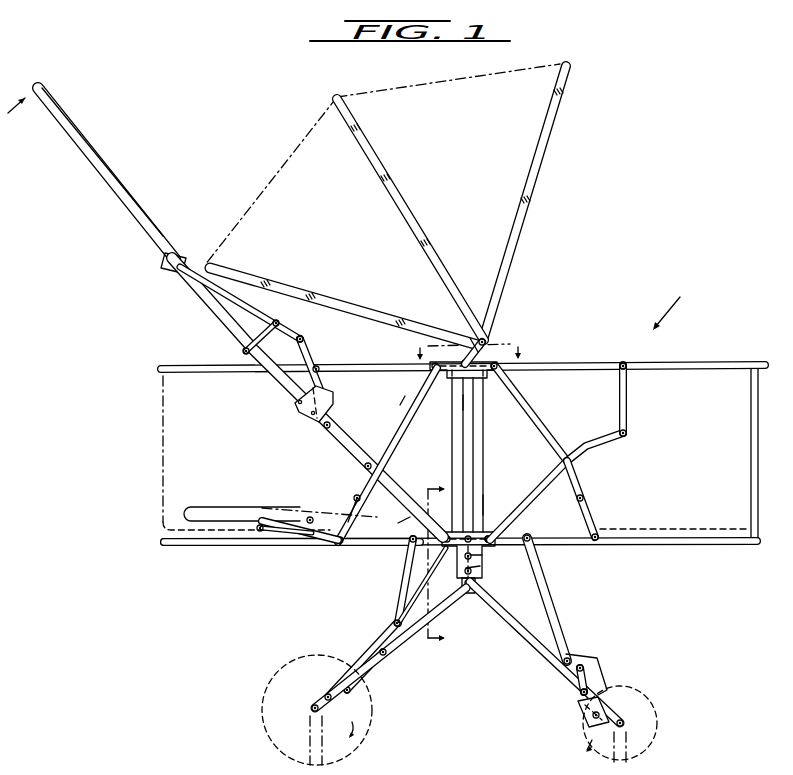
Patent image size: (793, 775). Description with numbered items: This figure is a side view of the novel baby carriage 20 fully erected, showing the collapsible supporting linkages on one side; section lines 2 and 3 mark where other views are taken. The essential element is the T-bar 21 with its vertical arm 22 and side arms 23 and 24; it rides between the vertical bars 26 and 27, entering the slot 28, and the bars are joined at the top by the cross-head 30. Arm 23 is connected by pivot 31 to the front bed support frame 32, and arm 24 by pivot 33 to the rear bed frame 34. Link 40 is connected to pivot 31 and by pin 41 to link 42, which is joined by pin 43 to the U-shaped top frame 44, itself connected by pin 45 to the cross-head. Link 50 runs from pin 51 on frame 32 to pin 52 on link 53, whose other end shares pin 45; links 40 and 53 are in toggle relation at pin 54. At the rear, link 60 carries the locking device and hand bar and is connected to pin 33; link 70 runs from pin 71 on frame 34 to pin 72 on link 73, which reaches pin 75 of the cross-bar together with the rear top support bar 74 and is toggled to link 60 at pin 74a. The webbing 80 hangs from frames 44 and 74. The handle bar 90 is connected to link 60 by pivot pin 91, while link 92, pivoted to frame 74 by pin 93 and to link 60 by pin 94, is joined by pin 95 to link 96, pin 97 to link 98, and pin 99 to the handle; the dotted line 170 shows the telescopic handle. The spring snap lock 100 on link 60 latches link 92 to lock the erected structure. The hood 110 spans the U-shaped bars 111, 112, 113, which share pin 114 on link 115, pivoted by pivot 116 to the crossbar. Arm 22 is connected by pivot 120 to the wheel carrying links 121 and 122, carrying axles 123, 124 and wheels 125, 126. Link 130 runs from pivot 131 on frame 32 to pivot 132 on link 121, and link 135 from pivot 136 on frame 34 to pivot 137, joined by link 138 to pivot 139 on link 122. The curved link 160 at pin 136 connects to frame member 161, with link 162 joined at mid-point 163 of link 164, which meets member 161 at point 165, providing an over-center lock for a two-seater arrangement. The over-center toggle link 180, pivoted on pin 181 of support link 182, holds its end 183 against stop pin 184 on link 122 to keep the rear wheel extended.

The carriage 20 is at (679, 300).
The T-bar 21 is at (484, 558).
The vertical arm 22 is at (478, 568).
The side arm 23 is at (484, 510).
The side arm 24 is at (446, 514).
The vertical bar 26 is at (452, 425).
The vertical bar 27 is at (484, 425).
The slot 28 is at (463, 403).
The cross-head 30 is at (478, 358).
The pivot 31 is at (490, 542).
The front carriage bed support frame 32 is at (663, 542).
The pivot 33 is at (455, 550).
The carriage bed frame 34 is at (308, 545).
The link 40 is at (595, 428).
The pin 41 is at (628, 434).
The link 42 is at (628, 400).
The pin 43 is at (621, 362).
The top frame 44 is at (670, 365).
The pin 45 is at (494, 370).
The link 50 is at (597, 520).
The pin 51 is at (600, 544).
The pin 52 is at (585, 497).
The link 53 is at (542, 422).
The pin 54 is at (572, 461).
The link 60 is at (392, 484).
The link 70 is at (348, 497).
The pin 71 is at (340, 548).
The pin 72 is at (360, 498).
The link 73 is at (400, 405).
The rear U-shaped top support bar 74 is at (320, 368).
The pin 74a is at (368, 463).
The pin 75 is at (430, 370).
The webbing 80 is at (754, 420).
The handle bar 90 is at (127, 182).
The pivot pin 91 is at (243, 351).
The link 92 is at (307, 353).
The pin 93 is at (303, 341).
The pin 94 is at (323, 428).
The pin 95 is at (301, 336).
The link 96 is at (274, 325).
The pin 97 is at (276, 320).
The link 98 is at (205, 260).
The pin 99 is at (176, 270).
The spring snap lock 100 is at (333, 397).
The hood 110 is at (545, 62).
The U-shaped bar 111 is at (543, 164).
The U-shaped bar 112 is at (410, 210).
The U-shaped bar 113 is at (355, 285).
The pin 114 is at (492, 332).
The link 115 is at (470, 333).
The pivot 116 is at (463, 362).
The pivot 120 is at (460, 568).
The wheel carrying link 121 is at (546, 655).
The wheel carrying link 122 is at (440, 610).
The axle 123 is at (632, 721).
The axle 124 is at (312, 708).
The wheel 125 is at (657, 733).
The wheel 126 is at (290, 757).
The link 130 is at (553, 606).
The pivot 131 is at (557, 483).
The pivot 132 is at (566, 665).
The link 135 is at (400, 582).
The pivot 136 is at (398, 545).
The pivot 137 is at (418, 590).
The link 138 is at (400, 660).
The pivot 139 is at (360, 686).
The curved link 160 is at (403, 518).
The U-shaped frame member 161 is at (248, 498).
The link 162 is at (290, 533).
The mid-point 163 is at (258, 531).
The link 164 is at (312, 517).
The point 165 is at (330, 511).
The dotted line 170 is at (152, 235).
The over-center toggle link 180 is at (363, 648).
The pin 181 is at (326, 698).
The support link 182 is at (360, 690).
The end 183 is at (392, 624).
The stop pin 184 is at (390, 653).
The section line 2- 2 is at (471, 355).
The section line 3- 3 is at (446, 556).